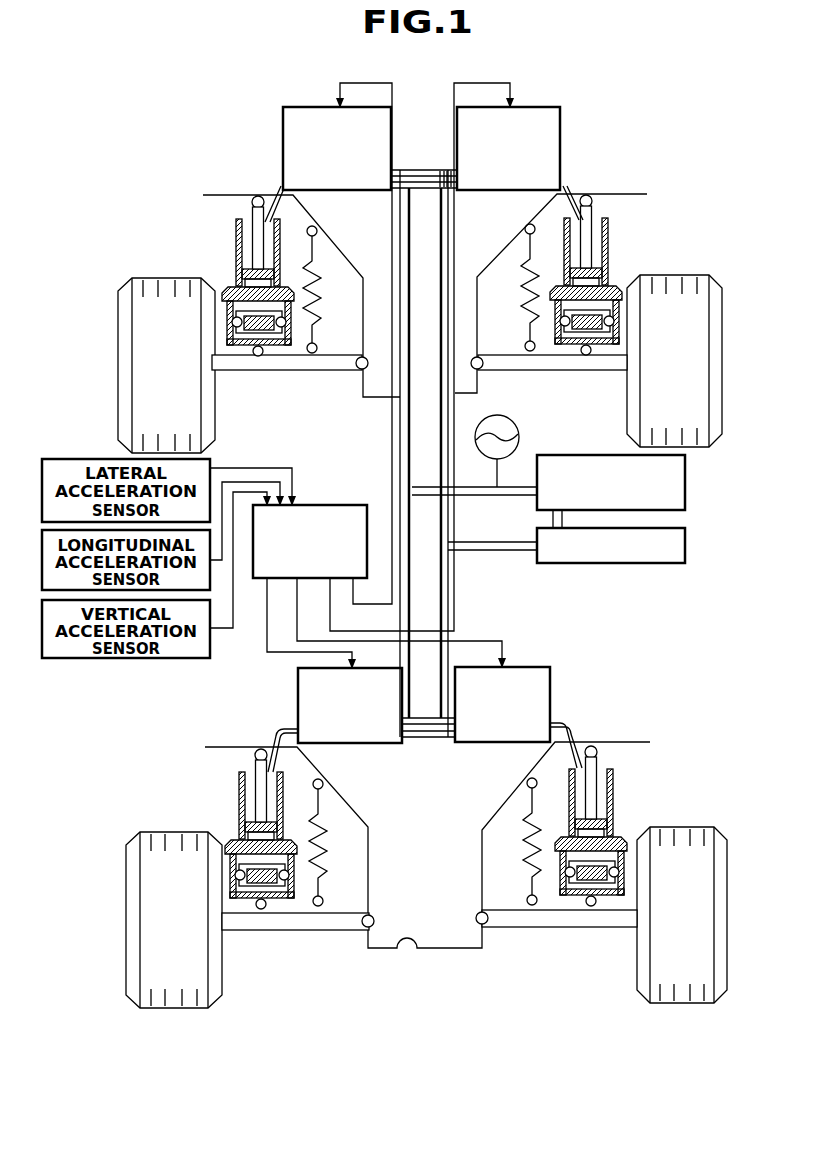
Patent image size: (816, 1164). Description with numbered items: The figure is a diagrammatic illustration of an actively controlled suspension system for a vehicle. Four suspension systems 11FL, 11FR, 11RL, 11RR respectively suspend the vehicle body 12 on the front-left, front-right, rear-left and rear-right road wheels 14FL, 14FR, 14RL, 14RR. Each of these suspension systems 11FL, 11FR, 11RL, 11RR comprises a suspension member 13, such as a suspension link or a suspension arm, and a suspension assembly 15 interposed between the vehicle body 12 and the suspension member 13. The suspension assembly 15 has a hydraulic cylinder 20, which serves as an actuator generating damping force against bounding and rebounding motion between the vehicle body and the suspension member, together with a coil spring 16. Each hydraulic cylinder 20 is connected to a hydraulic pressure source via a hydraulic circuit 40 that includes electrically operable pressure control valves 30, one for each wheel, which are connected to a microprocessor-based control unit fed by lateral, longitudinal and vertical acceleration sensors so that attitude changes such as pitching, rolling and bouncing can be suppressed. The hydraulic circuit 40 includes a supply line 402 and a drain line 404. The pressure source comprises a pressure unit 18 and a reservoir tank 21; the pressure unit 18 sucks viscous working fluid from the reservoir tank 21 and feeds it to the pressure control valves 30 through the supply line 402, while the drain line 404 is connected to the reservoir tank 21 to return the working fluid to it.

The front-left suspension system 11FL is at (223, 253).
The front-right suspension system 11FR is at (622, 268).
The rear-left suspension system 11RL is at (227, 805).
The rear-right suspension system 11RR is at (625, 795).
The vehicle body 12 is at (310, 237).
The suspension member 13 is at (274, 371).
The front-left road wheel 14FL is at (145, 343).
The front-right road wheel 14FR is at (698, 400).
The rear-left road wheel 14RL is at (150, 900).
The rear-right road wheel 14RR is at (698, 880).
The suspension assembly 15 is at (227, 238).
The coil spring 16 is at (317, 277).
The pressure unit 18 is at (685, 494).
The hydraulic cylinder 20 is at (247, 218).
The reservoir tank 21 is at (685, 564).
The pressure control valve 30 is at (283, 132).
The hydraulic circuit 40 is at (418, 162).
The supply line 402 is at (399, 431).
The drain line 404 is at (449, 408).